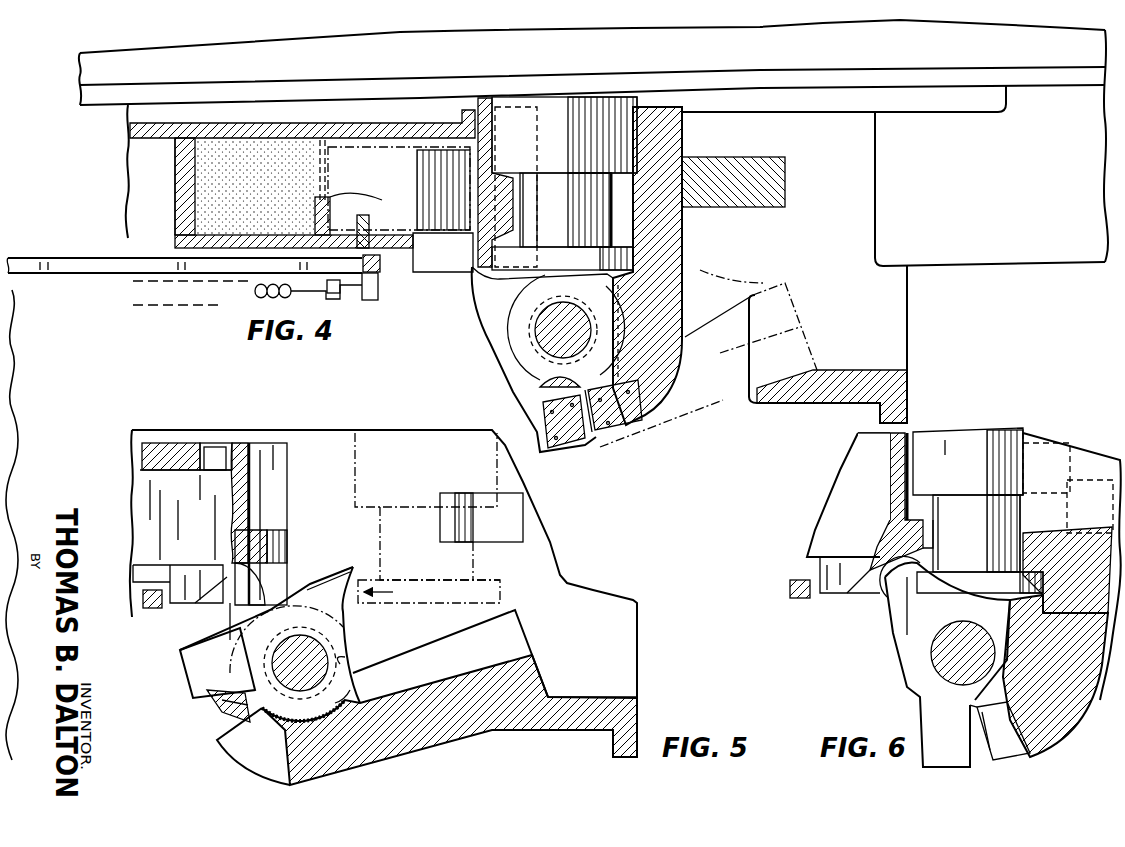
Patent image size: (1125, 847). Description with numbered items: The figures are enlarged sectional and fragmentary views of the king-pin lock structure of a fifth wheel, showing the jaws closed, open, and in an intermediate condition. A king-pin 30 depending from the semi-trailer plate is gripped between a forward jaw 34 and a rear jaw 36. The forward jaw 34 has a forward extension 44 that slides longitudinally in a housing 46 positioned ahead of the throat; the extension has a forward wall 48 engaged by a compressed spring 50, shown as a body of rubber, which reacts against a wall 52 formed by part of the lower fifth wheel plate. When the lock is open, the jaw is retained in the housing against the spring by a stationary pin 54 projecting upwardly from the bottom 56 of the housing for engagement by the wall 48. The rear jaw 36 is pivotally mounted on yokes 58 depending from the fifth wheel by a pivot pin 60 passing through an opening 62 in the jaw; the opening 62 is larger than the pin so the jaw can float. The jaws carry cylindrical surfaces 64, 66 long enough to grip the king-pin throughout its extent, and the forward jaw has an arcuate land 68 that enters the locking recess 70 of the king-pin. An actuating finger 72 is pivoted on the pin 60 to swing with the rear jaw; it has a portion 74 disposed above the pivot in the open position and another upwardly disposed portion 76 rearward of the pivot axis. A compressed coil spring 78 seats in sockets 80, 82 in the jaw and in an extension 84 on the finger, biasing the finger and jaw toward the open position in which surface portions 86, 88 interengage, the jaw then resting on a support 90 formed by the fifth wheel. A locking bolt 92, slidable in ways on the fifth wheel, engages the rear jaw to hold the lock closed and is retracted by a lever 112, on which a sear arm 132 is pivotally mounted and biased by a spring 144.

In FIG. 5, the king-pin 30 is at (458, 568).
In FIG. 6, the king-pin 30 is at (987, 445).
In FIG. 4, the forward jaw 34 is at (485, 110).
In FIG. 6, the forward jaw 34 is at (895, 498).
In FIG. 4, the rear jaw 36 is at (683, 268).
In FIG. 5, the rear jaw 36 is at (535, 680).
In FIG. 6, the rear jaw 36 is at (1065, 706).
In FIG. 4, the forward extension 44 is at (400, 209).
In FIG. 4, the housing 46 is at (357, 125).
In FIG. 4, the forward wall 48 is at (330, 182).
In FIG. 4, the compressed spring 50 is at (200, 197).
In FIG. 4, the wall 52 is at (180, 166).
In FIG. 4, the stationary pin 54 is at (385, 215).
In FIG. 4, the bottom of the housing 56 is at (253, 240).
In FIG. 4, the yokes 58 is at (496, 362).
In FIG. 5, the yokes 58 is at (238, 622).
In FIG. 4, the pivot pin 60 is at (577, 337).
In FIG. 5, the pivot pin 60 is at (313, 671).
In FIG. 6, the pivot pin 60 is at (976, 661).
In FIG. 5, the opening 62 is at (347, 658).
In FIG. 5, the cylindrical surface 64 is at (249, 483).
In FIG. 6, the cylindrical surface 64 is at (910, 453).
In FIG. 5, the cylindrical surface 66 is at (508, 635).
In FIG. 6, the cylindrical surface 66 is at (1037, 554).
In FIG. 4, the arcuate land 68 is at (520, 216).
In FIG. 5, the arcuate land 68 is at (255, 530).
In FIG. 6, the arcuate land 68 is at (925, 536).
In FIG. 4, the locking recess 70 is at (610, 228).
In FIG. 4, the actuating finger 72 is at (476, 306).
In FIG. 5, the actuating finger 72 is at (333, 560).
In FIG. 6, the actuating finger 72 is at (892, 650).
In FIG. 5, the portion of finger 74 is at (352, 572).
In FIG. 6, the portion of finger 74 is at (893, 598).
In FIG. 5, the upwardly disposed portion 76 is at (324, 577).
In FIG. 6, the upwardly disposed portion 76 is at (882, 617).
In FIG. 4, the compressed coil spring 78 is at (643, 398).
In FIG. 5, the compressed coil spring 78 is at (222, 711).
In FIG. 6, the compressed coil spring 78 is at (982, 748).
In FIG. 4, the socket 80 is at (620, 423).
In FIG. 4, the socket 82 is at (582, 440).
In FIG. 4, the extension 84 is at (539, 442).
In FIG. 5, the extension 84 is at (190, 671).
In FIG. 6, the extension 84 is at (934, 762).
In FIG. 5, the surface portion 86 is at (326, 745).
In FIG. 5, the surface portion 88 is at (338, 691).
In FIG. 4, the support 90 is at (790, 403).
In FIG. 5, the support 90 is at (546, 732).
In FIG. 4, the locking bolt 92 is at (785, 186).
In FIG. 5, the locking bolt 92 is at (523, 518).
In FIG. 6, the locking bolt 92 is at (1085, 480).
In FIG. 4, the lever 112 is at (90, 276).
In FIG. 4, the sear arm 132 is at (368, 302).
In FIG. 5, the sear arm 132 is at (152, 610).
In FIG. 4, the spring 144 is at (258, 295).